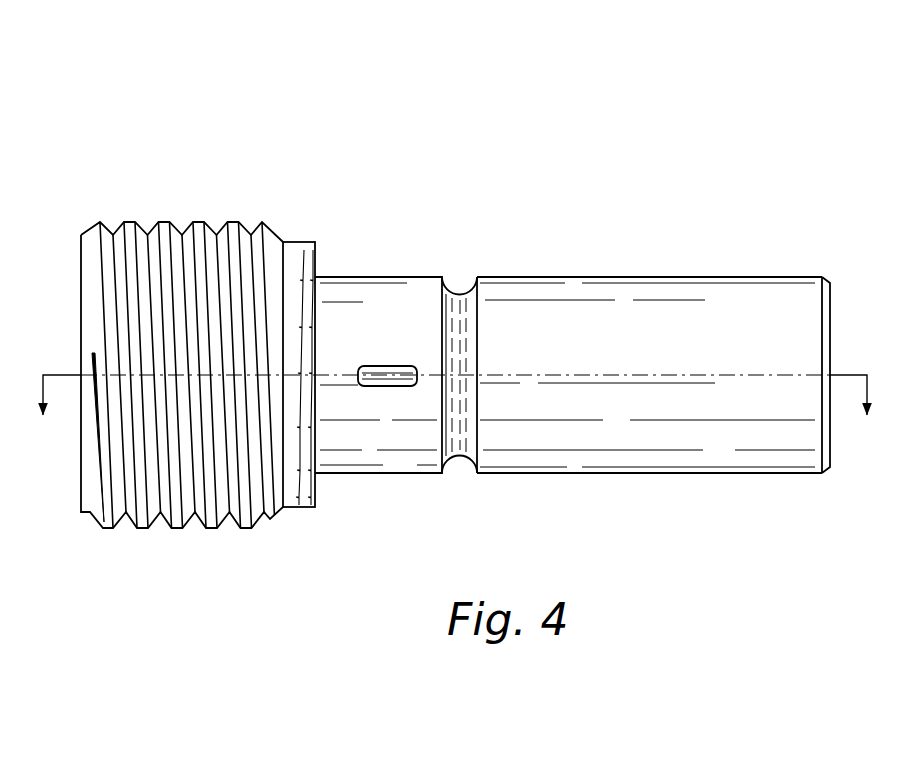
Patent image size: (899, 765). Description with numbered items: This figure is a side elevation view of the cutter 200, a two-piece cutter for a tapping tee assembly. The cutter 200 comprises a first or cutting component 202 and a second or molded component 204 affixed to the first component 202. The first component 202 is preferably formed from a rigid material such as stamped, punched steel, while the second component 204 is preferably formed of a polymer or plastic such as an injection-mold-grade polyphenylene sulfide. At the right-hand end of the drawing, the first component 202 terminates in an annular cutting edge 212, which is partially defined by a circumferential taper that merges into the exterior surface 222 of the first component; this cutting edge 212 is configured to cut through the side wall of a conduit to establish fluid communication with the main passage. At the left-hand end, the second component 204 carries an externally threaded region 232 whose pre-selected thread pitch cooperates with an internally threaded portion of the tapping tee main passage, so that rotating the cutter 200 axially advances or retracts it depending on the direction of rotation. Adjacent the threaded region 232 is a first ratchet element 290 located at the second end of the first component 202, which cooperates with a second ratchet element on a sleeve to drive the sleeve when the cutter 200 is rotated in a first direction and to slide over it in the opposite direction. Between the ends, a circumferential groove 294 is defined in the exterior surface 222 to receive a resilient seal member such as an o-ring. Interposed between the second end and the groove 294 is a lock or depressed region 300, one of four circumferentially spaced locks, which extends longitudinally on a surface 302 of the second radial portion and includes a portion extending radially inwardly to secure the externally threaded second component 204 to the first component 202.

The cutter 200 is at (464, 328).
The first or cutting component 202 is at (685, 345).
The second or molded component 204 is at (182, 353).
The annular cutting edge 212 is at (829, 293).
The exterior surface 222 is at (733, 432).
The externally threaded region 232 is at (175, 528).
The first ratchet element 290 is at (317, 262).
The circumferential groove 294 is at (463, 453).
The lock or depressed region 300 is at (393, 367).
The surface of the second radial portion 302 is at (408, 380).